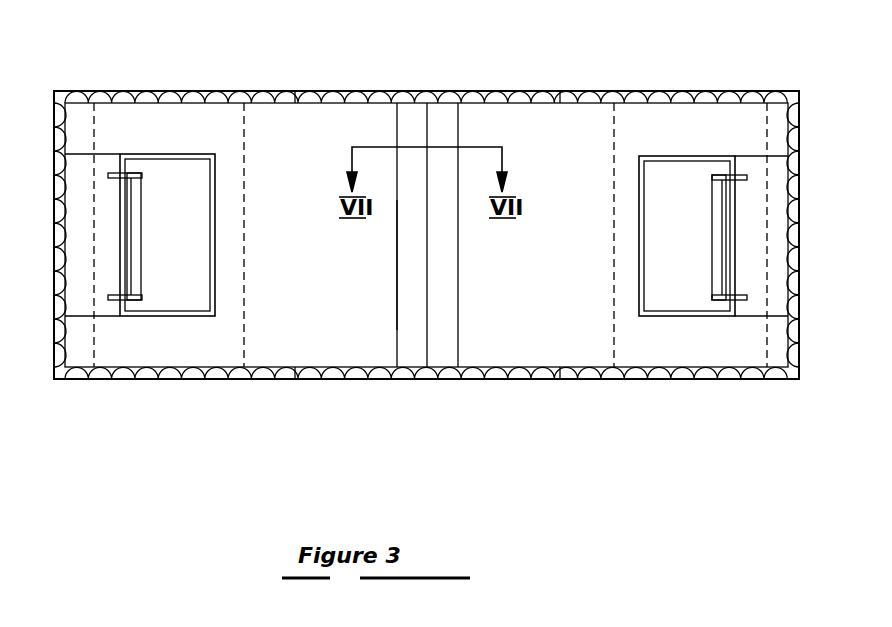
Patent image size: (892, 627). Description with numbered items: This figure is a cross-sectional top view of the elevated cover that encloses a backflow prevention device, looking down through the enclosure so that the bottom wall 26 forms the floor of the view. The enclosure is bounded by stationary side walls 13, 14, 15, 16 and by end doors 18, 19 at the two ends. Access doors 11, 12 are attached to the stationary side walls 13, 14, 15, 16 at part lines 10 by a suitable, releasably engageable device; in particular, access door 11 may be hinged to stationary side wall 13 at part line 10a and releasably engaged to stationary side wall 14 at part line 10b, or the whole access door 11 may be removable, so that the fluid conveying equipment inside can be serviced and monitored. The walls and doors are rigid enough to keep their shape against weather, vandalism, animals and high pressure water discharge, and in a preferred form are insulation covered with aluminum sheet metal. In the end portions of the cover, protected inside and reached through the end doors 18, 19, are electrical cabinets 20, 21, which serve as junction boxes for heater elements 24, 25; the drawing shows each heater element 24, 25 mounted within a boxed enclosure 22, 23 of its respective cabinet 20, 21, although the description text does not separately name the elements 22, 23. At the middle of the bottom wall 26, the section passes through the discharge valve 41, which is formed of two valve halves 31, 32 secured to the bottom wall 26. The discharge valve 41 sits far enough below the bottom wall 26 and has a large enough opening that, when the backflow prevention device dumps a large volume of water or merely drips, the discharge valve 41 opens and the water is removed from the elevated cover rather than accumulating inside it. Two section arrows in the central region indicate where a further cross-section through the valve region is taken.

The part lines 10 is at (294, 92).
The part line 10a is at (295, 367).
The part line 10b is at (560, 367).
The access door 11 is at (457, 380).
The access door 12 is at (440, 91).
The stationary side wall 13 is at (140, 380).
The stationary side wall 14 is at (722, 380).
The stationary side wall 15 is at (168, 91).
The stationary side wall 16 is at (694, 91).
The end door 18 is at (55, 228).
The end door 19 is at (800, 292).
The electrical cabinet 20 is at (80, 290).
The electrical cabinet 21 is at (775, 185).
The left inner box 22 is at (217, 226).
The right inner box 23 is at (640, 244).
The heater element 24 is at (143, 190).
The heater element 25 is at (712, 275).
The bottom wall 26 is at (316, 192).
The valve halve 31 is at (443, 275).
The valve halve 32 is at (410, 242).
The discharge valve 41 is at (380, 324).